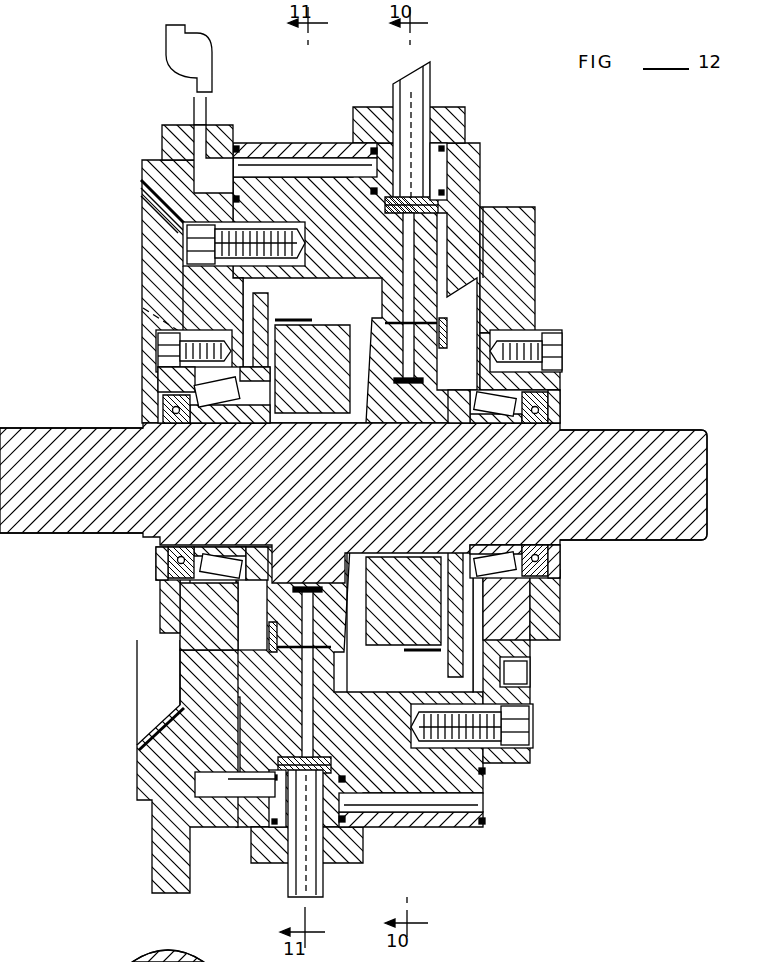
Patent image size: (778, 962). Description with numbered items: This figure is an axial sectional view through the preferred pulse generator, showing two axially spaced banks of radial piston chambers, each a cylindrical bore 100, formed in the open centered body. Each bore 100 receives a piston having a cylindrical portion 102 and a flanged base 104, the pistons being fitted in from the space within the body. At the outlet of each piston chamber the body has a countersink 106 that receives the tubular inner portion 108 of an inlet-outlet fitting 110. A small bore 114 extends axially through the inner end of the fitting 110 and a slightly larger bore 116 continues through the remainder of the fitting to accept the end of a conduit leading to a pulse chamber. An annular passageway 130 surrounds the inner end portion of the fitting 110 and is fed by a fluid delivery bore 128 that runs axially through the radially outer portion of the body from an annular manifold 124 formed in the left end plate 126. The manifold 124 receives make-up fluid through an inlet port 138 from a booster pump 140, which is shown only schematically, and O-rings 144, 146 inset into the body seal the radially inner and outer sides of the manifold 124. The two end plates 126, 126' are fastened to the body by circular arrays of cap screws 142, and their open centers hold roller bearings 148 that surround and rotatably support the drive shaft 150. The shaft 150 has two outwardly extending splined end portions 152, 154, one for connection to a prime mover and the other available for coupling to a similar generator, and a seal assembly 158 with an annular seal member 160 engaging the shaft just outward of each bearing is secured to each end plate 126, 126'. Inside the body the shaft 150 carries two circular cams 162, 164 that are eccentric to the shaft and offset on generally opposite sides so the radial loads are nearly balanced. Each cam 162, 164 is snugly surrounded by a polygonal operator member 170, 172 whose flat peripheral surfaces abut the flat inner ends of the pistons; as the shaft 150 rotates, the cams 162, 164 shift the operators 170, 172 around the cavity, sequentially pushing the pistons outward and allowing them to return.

The cylindrical bore 100 is at (392, 269).
The cylindrical portion 102 is at (424, 238).
The flanged base 104 is at (442, 320).
The countersink 106 is at (443, 173).
The tubular inner portion 108 is at (447, 193).
The inlet-outlet fitting 110 is at (466, 122).
The small bore 114 is at (453, 151).
The larger diameter bore 116 is at (419, 117).
The annular manifold 124 is at (218, 178).
The end plate 126 is at (389, 481).
The end plate 126' is at (389, 481).
The bore 128 is at (287, 165).
The annular passageway 130 is at (392, 172).
The inlet port 138 is at (196, 143).
The booster pump 140 is at (176, 50).
The cap screws 142 is at (169, 352).
The O-ring 144 is at (236, 148).
The O-ring 146 is at (246, 195).
The roller bearings 148 is at (218, 392).
The drive shaft 150 is at (511, 506).
The splined end portion 152 is at (46, 436).
The splined end portion 154 is at (690, 451).
The seal assembly 158 is at (170, 592).
The annular seal member 160 is at (166, 553).
The circular cam 162 is at (389, 400).
The circular cam 164 is at (348, 610).
The operator member 170 is at (441, 362).
The operator member 172 is at (245, 643).